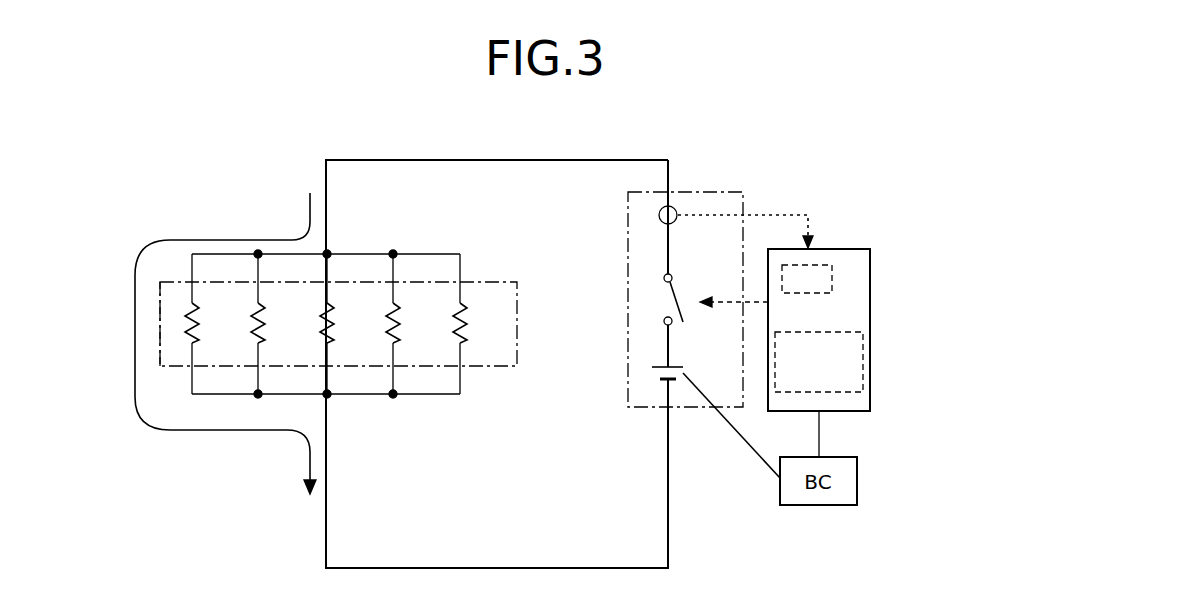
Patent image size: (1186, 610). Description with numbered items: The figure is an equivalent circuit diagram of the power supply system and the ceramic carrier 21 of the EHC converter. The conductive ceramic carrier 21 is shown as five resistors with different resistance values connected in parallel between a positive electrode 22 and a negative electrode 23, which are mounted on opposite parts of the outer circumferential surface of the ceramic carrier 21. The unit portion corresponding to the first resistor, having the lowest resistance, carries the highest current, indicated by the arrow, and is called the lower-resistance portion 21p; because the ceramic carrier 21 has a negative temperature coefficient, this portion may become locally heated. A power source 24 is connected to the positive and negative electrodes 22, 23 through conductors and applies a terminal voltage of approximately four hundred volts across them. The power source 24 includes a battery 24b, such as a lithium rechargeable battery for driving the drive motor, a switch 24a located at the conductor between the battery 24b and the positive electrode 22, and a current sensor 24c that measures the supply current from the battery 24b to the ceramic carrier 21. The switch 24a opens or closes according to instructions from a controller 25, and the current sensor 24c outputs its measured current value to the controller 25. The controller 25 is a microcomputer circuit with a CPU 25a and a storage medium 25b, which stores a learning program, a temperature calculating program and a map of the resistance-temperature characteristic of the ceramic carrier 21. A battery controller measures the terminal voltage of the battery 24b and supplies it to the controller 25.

The ceramic carrier 21 is at (503, 282).
The lower-resistance portion 21p is at (172, 352).
The positive electrode 22 is at (330, 252).
The negative electrode 23 is at (329, 396).
The power source 24 is at (657, 267).
The switch 24a is at (670, 300).
The battery 24b is at (660, 380).
The current sensor 24c is at (657, 215).
The controller 25 is at (862, 310).
The CPU 25a is at (832, 278).
The storage medium 25b is at (818, 330).